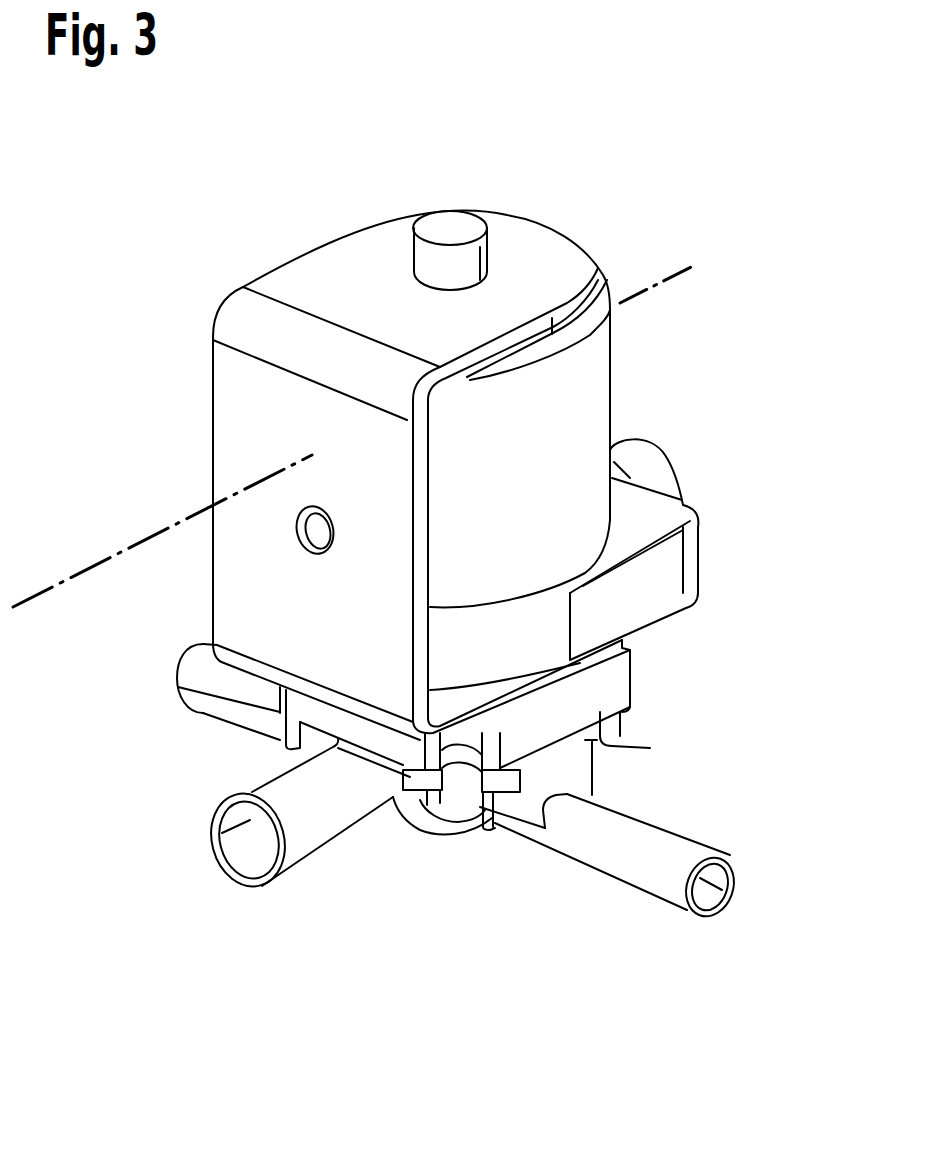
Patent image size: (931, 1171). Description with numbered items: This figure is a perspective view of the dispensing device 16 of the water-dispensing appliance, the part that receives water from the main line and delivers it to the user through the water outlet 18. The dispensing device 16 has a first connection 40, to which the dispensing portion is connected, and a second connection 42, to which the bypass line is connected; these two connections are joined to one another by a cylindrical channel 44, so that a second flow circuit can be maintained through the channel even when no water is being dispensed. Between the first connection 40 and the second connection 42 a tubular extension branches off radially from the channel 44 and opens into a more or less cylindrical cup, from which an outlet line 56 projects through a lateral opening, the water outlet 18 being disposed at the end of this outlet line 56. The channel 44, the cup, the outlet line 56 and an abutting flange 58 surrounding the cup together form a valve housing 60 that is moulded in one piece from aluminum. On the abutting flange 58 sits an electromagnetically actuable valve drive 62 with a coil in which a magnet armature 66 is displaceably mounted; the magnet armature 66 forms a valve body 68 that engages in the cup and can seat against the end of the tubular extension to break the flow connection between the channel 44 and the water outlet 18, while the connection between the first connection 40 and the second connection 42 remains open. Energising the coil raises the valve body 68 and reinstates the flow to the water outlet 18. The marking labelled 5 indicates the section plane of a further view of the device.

The dispensing device 16 is at (538, 117).
The electromagnetically actuable valve drive 62 is at (303, 215).
The magnet armature 66 is at (454, 202).
The valve body 68 is at (483, 257).
The section line 5- 5 is at (712, 285).
The second connection 42 is at (170, 720).
The abutting flange 58 is at (590, 742).
The first connection 40 is at (739, 847).
The outlet line 56 is at (352, 845).
The valve housing 60 is at (443, 858).
The channel 44 is at (523, 835).
The water outlet 18 is at (276, 923).